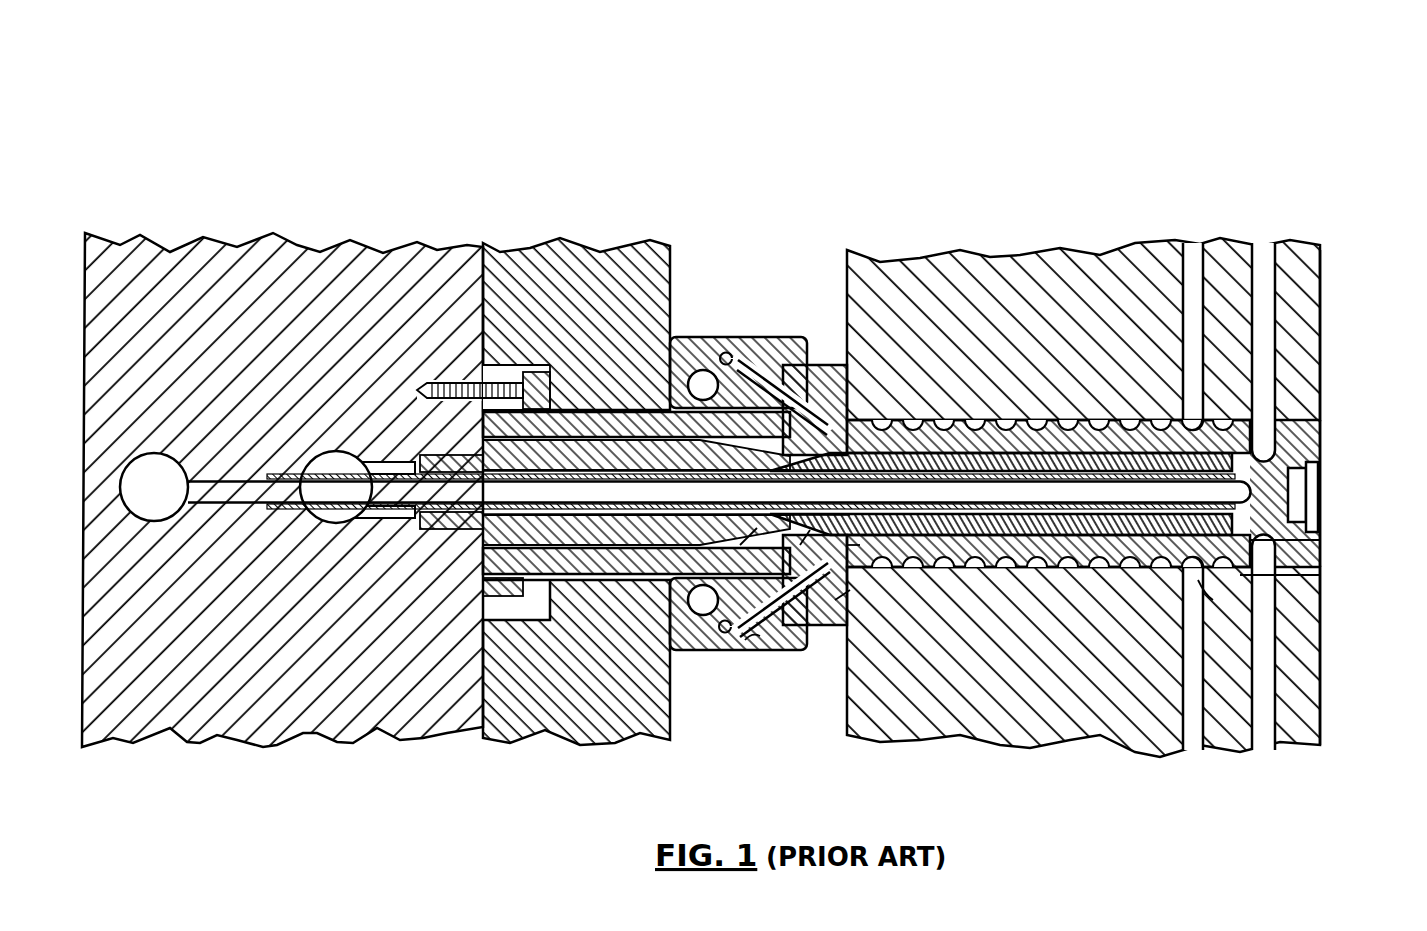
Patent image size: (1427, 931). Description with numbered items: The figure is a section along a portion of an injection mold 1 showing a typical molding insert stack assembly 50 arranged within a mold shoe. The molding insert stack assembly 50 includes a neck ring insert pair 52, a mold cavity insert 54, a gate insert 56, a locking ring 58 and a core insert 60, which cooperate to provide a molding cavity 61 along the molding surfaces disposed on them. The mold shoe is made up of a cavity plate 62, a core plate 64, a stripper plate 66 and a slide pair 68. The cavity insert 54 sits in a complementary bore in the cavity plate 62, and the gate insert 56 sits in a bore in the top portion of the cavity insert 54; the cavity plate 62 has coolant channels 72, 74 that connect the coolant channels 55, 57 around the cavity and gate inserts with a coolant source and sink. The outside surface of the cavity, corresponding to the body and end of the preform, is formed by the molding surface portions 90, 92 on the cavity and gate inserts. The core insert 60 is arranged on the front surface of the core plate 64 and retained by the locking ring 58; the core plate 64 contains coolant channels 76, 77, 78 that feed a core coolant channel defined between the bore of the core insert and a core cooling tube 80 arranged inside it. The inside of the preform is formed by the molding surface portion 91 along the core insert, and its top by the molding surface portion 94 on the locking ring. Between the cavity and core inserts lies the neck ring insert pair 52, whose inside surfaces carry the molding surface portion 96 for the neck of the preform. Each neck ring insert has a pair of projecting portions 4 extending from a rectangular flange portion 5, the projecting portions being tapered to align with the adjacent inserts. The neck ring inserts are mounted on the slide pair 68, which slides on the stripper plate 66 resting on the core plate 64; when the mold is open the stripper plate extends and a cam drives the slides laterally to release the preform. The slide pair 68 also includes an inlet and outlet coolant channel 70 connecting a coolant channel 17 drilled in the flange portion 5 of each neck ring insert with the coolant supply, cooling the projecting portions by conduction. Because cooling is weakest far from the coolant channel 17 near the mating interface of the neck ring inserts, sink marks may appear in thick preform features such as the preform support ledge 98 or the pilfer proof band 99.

The injection mold 1 is at (1210, 114).
The projecting portions 4 is at (870, 572).
The flange portion 5 is at (830, 600).
The coolant channel 17 is at (800, 400).
The molding insert stack assembly 50 is at (1330, 470).
The neck ring insert pair 52 is at (825, 355).
The mold cavity insert 54 is at (1050, 430).
The coolant channel 55 is at (1200, 575).
The gate insert 56 is at (1295, 550).
The coolant channel 57 is at (1283, 585).
The locking ring 58 is at (690, 340).
The core insert 60 is at (608, 462).
The molding cavity 61 is at (930, 440).
The cavity plate 62 is at (960, 690).
The core plate 64 is at (235, 705).
The stripper plate 66 is at (567, 710).
The slide pair 68 is at (757, 635).
The coolant channel 70 is at (737, 356).
The coolant channel 72 is at (1255, 250).
The coolant channel 74 is at (1190, 248).
The coolant channel 76 is at (158, 472).
The coolant channel 77 is at (225, 478).
The coolant channel 78 is at (343, 462).
The core cooling tube 80 is at (290, 475).
The molding surface portion 90 is at (1080, 537).
The molding surface portion 91 is at (1035, 532).
The molding surface portion 92 is at (1275, 580).
The molding surface portion 94 is at (748, 537).
The molding surface portion 96 is at (802, 540).
The preform support ledge 98 is at (853, 548).
The pilfer proof band 99 is at (758, 638).